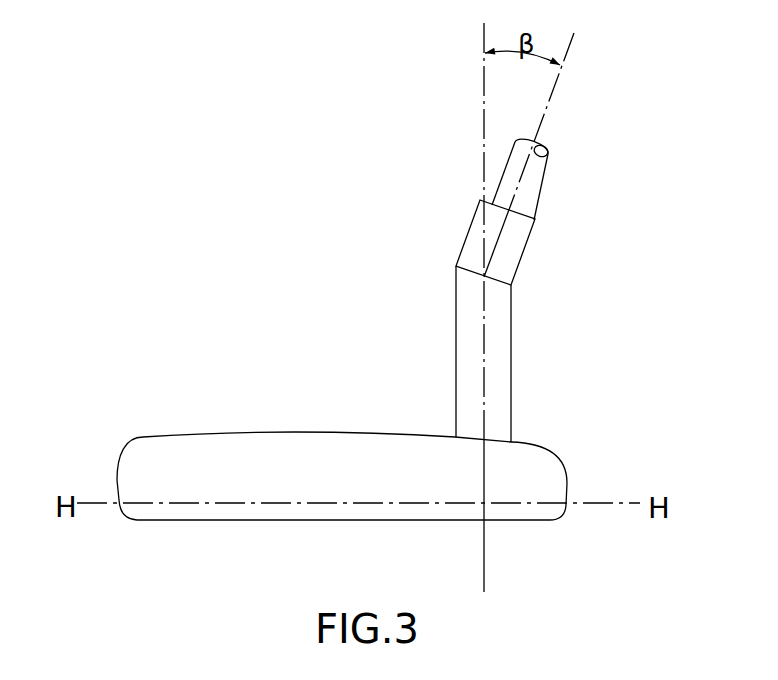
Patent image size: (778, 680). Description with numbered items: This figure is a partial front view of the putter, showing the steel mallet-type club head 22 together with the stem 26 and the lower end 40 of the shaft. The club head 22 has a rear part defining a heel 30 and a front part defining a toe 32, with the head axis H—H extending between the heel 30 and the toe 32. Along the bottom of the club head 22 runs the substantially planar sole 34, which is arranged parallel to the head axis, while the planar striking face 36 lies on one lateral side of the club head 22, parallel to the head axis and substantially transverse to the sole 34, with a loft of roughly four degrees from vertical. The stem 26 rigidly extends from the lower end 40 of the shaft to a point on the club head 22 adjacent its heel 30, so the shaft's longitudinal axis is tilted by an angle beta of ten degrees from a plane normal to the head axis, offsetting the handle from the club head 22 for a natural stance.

The club head 22 is at (205, 405).
The stem 26 is at (500, 408).
The heel 30 is at (537, 538).
The toe 32 is at (157, 537).
The sole 34 is at (348, 522).
The striking face 36 is at (251, 475).
The lower end of the shaft 40 is at (540, 205).